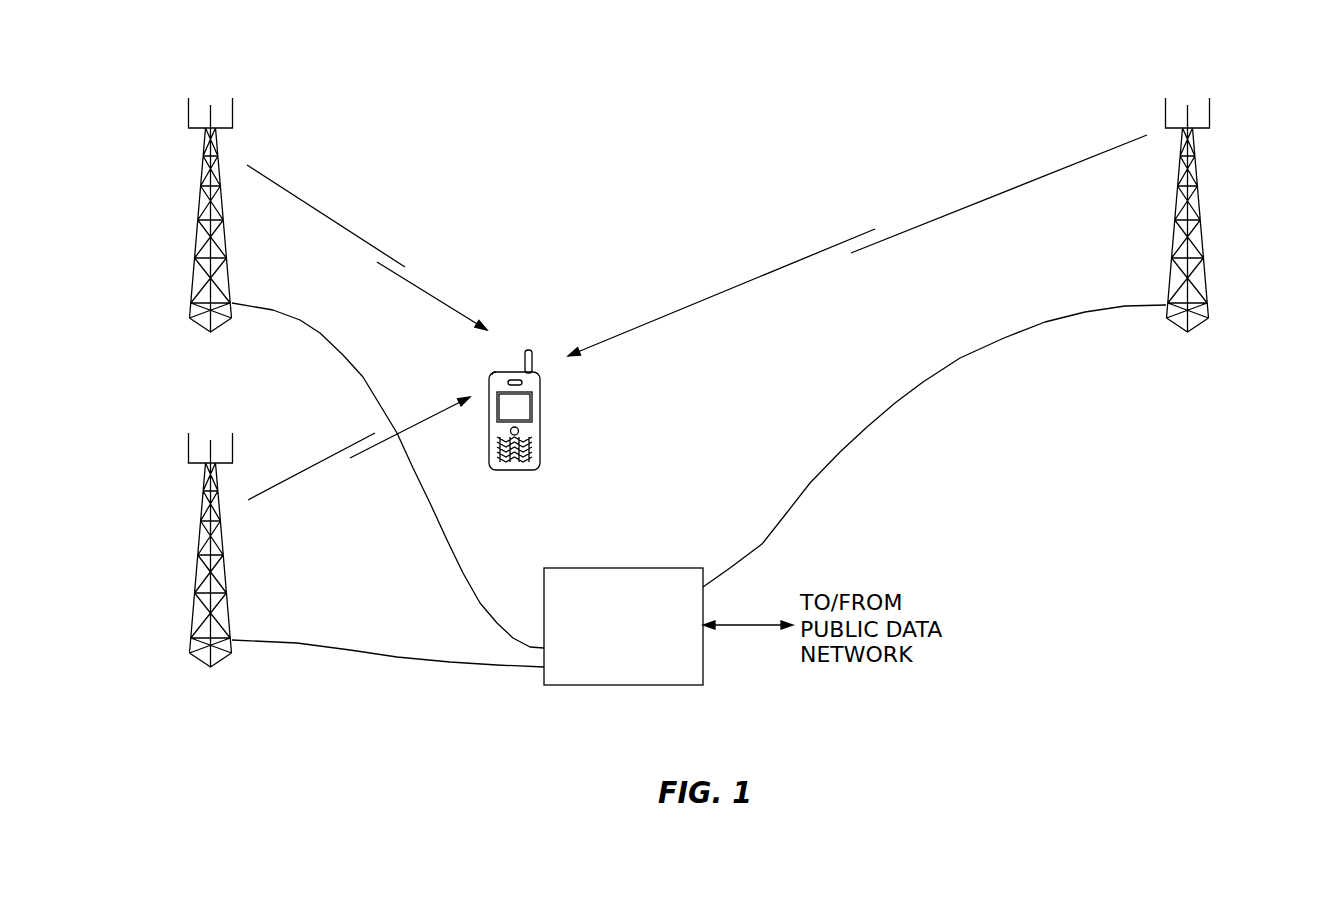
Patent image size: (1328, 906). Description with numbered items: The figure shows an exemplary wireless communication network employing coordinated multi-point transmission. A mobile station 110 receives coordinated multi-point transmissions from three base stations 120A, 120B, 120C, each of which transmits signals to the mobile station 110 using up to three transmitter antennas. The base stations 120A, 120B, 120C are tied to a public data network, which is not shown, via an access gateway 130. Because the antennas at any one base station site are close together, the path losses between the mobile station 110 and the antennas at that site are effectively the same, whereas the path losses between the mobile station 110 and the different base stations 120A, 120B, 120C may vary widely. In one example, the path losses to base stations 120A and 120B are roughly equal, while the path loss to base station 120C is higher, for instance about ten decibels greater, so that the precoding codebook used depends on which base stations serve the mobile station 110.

The mobile station 110 is at (540, 462).
The base station 120A is at (190, 305).
The base station 120B is at (190, 640).
The base station 120C is at (1209, 305).
The access gateway 130 is at (606, 662).